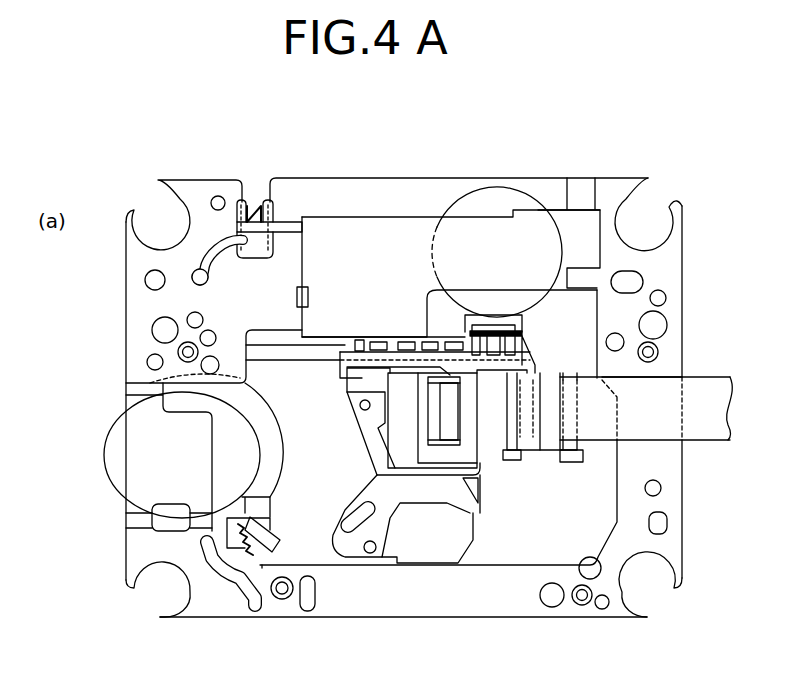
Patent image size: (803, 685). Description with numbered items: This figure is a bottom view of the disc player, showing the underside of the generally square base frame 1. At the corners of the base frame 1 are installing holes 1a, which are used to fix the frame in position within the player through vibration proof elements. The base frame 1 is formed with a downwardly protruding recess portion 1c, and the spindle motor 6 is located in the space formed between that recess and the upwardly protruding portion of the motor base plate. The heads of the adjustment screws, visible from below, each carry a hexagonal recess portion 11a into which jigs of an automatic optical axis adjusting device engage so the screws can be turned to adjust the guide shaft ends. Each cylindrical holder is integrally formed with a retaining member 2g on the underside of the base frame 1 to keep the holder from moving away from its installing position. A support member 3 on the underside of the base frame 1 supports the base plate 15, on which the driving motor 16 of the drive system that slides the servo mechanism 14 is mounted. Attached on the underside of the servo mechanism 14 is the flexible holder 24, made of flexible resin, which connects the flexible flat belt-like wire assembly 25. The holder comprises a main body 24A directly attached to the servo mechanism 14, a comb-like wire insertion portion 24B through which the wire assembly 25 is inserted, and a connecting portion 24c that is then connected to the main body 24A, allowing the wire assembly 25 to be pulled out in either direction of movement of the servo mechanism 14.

The base frame 1 is at (398, 196).
The installing hole 1a is at (645, 220).
The recess portion 1c is at (140, 460).
The retaining member 2g is at (662, 324).
The support member 3 is at (290, 230).
The spindle motor 6 is at (113, 434).
The hexagonal recess portion 11a is at (178, 351).
The servo mechanism 14 is at (420, 548).
The base plate 15 is at (427, 218).
The driving motor 16 is at (503, 200).
The flexible holder 24 is at (498, 473).
The main body 24A is at (376, 451).
The comb-like wire insertion portion 24B is at (535, 460).
The connecting portion 24c is at (527, 345).
The flexible flat belt-like wire assembly 25 is at (696, 430).